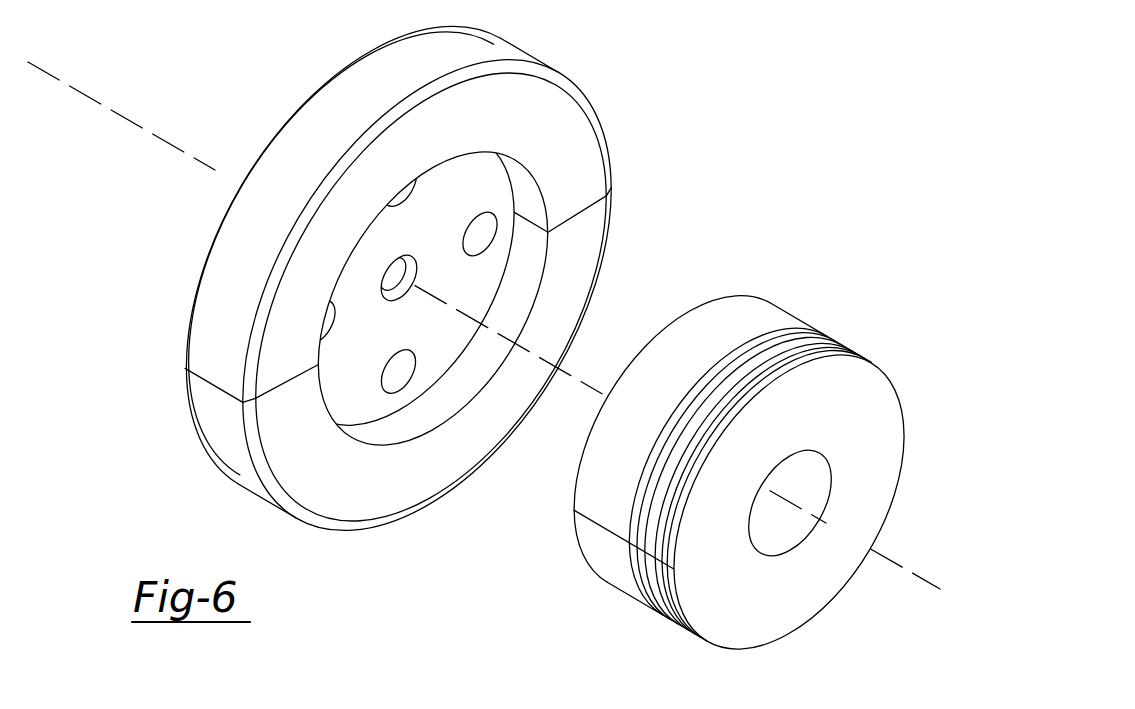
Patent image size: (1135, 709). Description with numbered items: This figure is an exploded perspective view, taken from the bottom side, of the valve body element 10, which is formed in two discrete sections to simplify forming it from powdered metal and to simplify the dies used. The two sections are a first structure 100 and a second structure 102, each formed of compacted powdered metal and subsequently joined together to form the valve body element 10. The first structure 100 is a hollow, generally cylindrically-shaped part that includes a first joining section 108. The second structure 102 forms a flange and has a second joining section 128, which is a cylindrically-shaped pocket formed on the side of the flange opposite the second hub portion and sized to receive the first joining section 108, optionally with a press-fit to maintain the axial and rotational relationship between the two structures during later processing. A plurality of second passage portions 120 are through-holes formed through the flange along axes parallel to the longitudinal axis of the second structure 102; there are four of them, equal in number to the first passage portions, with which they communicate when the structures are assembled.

The valve body element 10 is at (510, 592).
The first structure 100 is at (597, 487).
The second structure 102 is at (410, 475).
The first joining section 108 is at (747, 313).
The second passage portions 120 is at (474, 238).
The second joining section 128 is at (506, 311).